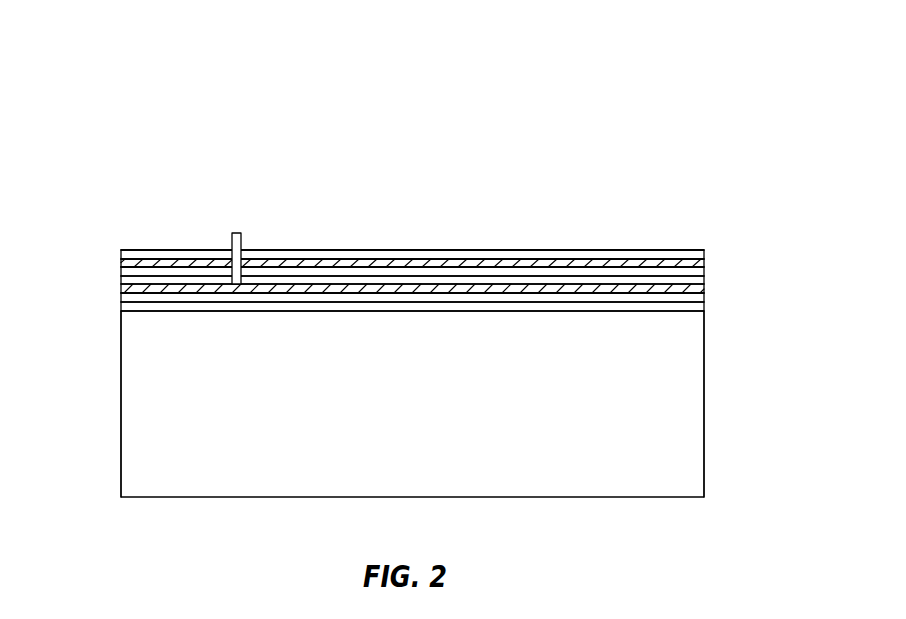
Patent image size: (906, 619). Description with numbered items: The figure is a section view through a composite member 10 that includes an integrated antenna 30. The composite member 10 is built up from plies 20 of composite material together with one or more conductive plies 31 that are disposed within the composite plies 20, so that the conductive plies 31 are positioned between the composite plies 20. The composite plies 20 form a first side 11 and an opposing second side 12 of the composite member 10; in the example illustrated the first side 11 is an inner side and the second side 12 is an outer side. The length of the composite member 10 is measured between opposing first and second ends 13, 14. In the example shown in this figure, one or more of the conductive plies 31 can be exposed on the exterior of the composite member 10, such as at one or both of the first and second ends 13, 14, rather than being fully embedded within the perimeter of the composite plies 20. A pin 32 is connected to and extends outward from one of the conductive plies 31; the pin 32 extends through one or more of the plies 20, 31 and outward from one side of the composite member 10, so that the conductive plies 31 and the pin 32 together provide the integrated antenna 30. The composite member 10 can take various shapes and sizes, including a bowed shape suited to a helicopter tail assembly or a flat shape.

The composite member 10 is at (120, 155).
The first side 11 is at (308, 468).
The second side 12 is at (472, 250).
The first end 13 is at (121, 372).
The second end 14 is at (704, 390).
The composite plies 20 is at (121, 254).
The integrated antenna 30 is at (263, 233).
The conductive plies 31 is at (704, 263).
The pin 32 is at (233, 236).